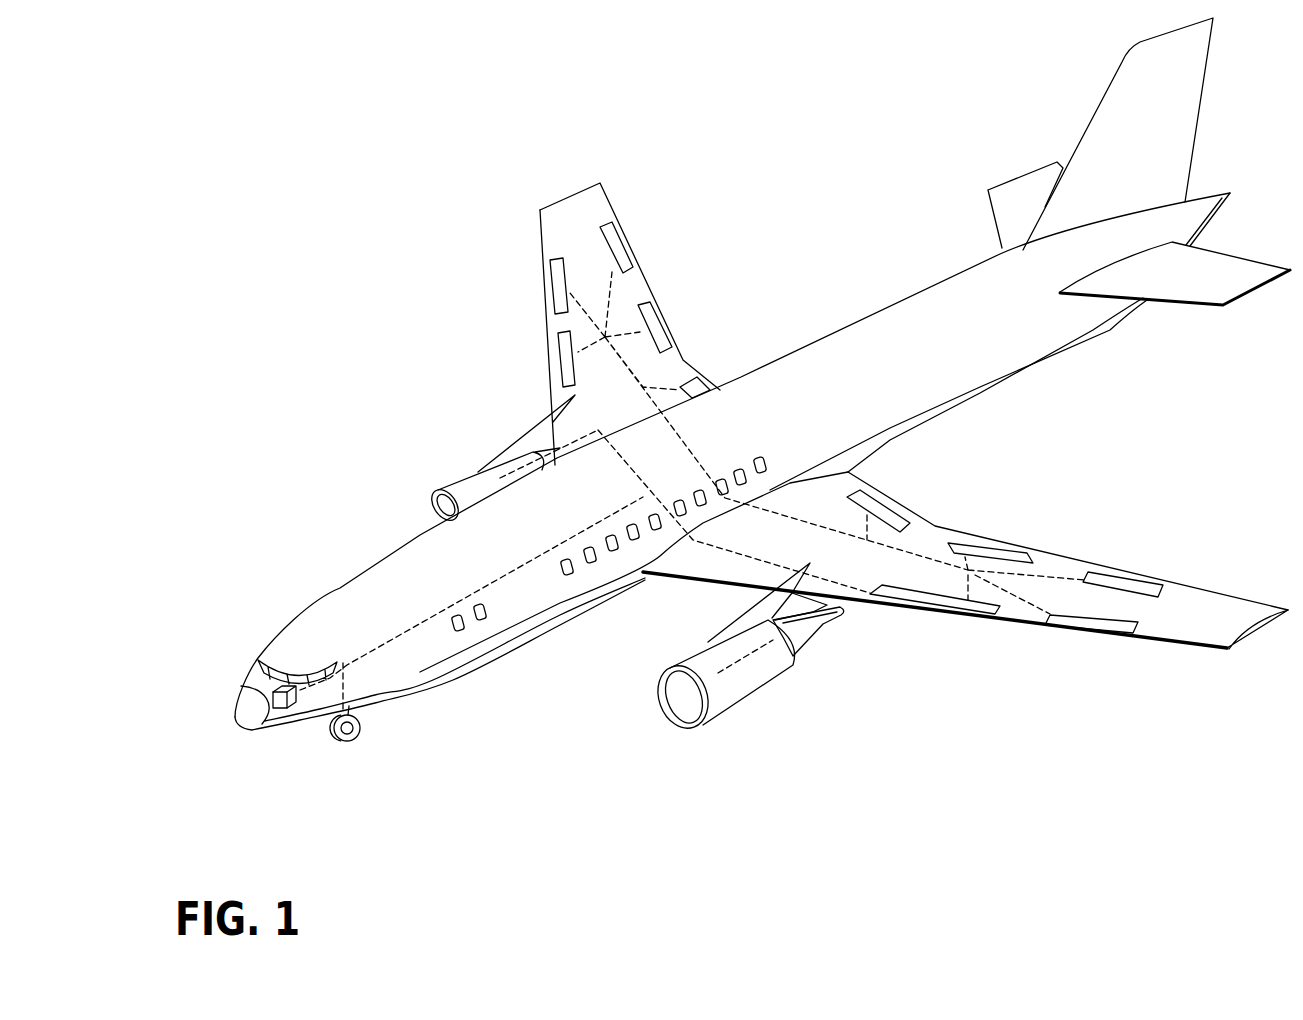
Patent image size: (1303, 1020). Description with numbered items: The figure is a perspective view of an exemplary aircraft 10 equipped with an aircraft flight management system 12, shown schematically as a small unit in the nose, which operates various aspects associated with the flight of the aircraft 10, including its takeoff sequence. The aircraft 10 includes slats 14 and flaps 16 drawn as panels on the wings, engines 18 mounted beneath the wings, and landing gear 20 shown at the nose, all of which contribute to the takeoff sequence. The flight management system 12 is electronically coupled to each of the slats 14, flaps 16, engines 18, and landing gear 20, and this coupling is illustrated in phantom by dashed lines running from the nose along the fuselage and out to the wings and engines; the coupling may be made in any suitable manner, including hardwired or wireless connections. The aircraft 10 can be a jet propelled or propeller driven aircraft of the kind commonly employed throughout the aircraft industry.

The aircraft 10 is at (318, 515).
The aircraft flight management system 12 is at (293, 732).
The slats 14 is at (558, 282).
The flaps 16 is at (618, 248).
The engines 18 is at (740, 692).
The landing gear 20 is at (347, 742).